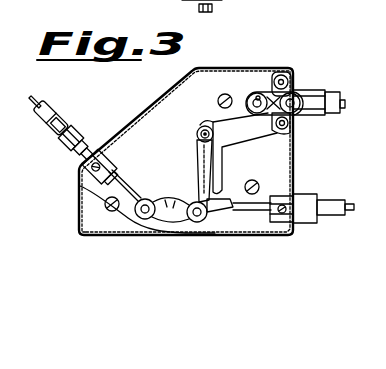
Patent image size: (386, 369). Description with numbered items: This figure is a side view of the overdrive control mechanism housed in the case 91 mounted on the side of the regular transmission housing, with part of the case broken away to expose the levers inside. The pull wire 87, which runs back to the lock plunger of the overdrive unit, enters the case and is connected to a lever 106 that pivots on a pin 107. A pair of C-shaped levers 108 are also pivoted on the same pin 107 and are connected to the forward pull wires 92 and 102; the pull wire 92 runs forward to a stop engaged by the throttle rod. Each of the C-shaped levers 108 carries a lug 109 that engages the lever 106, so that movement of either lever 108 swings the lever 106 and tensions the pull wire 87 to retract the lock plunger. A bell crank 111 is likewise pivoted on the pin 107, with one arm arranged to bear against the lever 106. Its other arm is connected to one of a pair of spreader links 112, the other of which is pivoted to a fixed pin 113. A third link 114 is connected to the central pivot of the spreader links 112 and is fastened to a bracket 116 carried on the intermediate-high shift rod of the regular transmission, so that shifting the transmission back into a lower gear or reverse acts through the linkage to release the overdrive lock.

The pull wire 87 is at (240, 208).
The case 91 is at (207, 66).
The pull wire 92 is at (60, 120).
The pull wire 102 is at (38, 99).
The lever 106 is at (200, 168).
The pin 107 is at (204, 126).
The C-shaped levers 108 is at (178, 203).
The lug 109 is at (200, 152).
The bell crank 111 is at (242, 133).
The spreader links 112 is at (270, 90).
The fixed pin 113 is at (295, 82).
The third link 114 is at (281, 80).
The bracket 116 is at (308, 97).